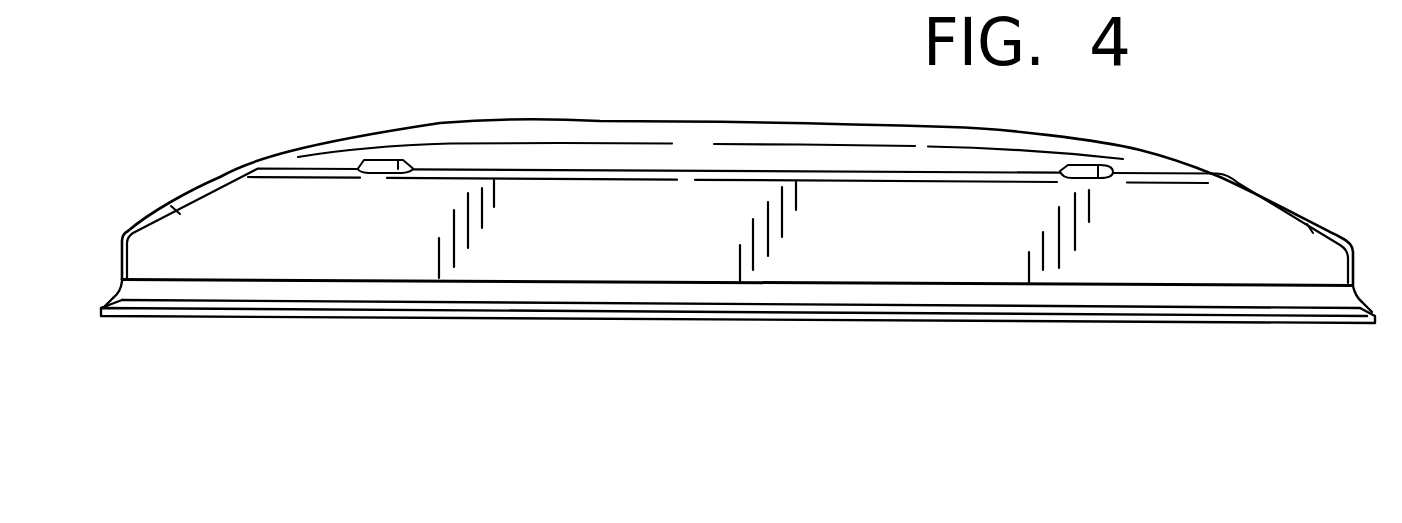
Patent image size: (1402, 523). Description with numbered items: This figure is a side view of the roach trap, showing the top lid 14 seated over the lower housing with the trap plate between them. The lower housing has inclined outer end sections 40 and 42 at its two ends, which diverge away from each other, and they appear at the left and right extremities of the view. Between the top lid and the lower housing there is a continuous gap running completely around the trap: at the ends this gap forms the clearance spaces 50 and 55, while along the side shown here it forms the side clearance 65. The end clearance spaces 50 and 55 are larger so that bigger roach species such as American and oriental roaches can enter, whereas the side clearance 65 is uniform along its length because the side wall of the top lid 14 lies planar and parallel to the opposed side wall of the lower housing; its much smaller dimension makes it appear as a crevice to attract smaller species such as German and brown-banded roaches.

The top lid 14 is at (1108, 138).
The outer end section 40 is at (1363, 307).
The outer end section 42 is at (121, 296).
The clearance space 50 is at (183, 218).
The clearance space 55 is at (1312, 231).
The side clearance 65 is at (1002, 293).